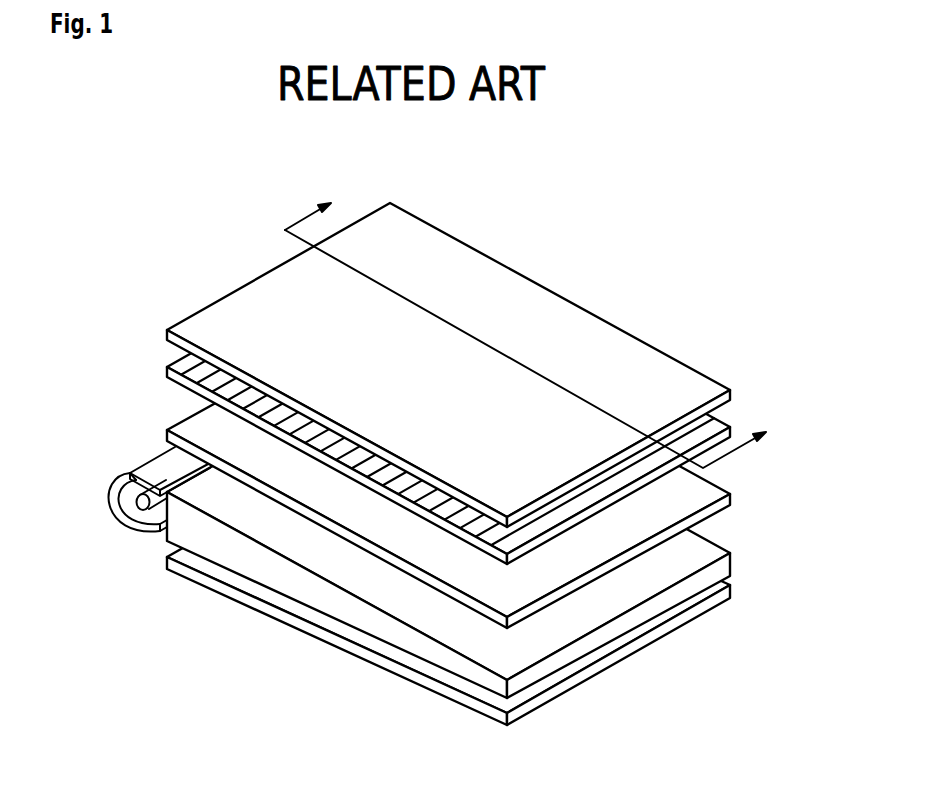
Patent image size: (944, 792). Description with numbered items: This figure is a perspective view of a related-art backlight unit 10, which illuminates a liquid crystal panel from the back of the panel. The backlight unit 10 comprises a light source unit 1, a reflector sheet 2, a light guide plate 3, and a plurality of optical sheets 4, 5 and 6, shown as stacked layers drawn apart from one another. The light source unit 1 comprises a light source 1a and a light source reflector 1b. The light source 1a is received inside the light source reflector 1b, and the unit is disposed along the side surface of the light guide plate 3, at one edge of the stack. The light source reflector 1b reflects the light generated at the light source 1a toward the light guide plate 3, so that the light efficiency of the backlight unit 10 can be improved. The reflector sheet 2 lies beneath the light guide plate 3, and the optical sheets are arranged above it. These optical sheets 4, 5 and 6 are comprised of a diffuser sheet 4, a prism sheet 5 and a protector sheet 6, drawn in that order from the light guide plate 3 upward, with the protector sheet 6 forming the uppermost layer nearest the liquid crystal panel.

The backlight unit 10 is at (648, 236).
The light source unit 1 is at (127, 519).
The light source 1a is at (139, 508).
The light source reflector 1b is at (120, 484).
The reflector sheet 2 is at (278, 612).
The light guide plate 3 is at (705, 540).
The diffuser sheet 4 is at (700, 488).
The prism sheet 5 is at (700, 428).
The protector sheet 6 is at (697, 378).